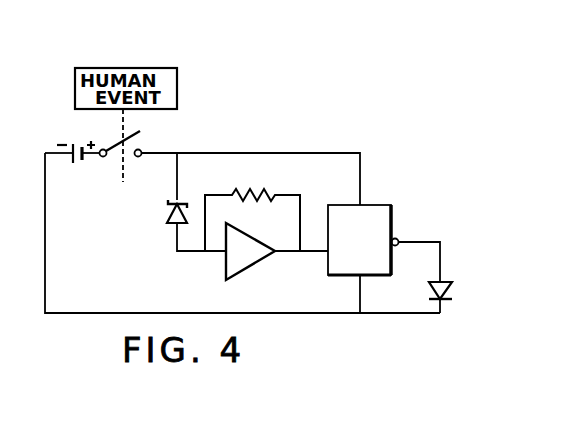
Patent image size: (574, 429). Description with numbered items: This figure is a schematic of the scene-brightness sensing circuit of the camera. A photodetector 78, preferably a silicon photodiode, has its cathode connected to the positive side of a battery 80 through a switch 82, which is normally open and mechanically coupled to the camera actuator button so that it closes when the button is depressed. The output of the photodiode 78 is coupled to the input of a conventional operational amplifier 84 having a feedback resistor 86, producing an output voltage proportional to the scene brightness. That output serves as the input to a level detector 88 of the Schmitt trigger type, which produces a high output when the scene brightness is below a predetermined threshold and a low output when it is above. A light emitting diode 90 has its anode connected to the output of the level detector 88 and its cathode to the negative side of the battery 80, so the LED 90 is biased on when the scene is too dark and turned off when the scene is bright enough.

The photodetector 78 is at (167, 209).
The battery 80 is at (75, 143).
The switch 82 is at (146, 129).
The operational amplifier 84 is at (243, 240).
The feedback resistor 86 is at (269, 193).
The level detector 88 is at (362, 205).
The light emitting diode 90 is at (450, 291).